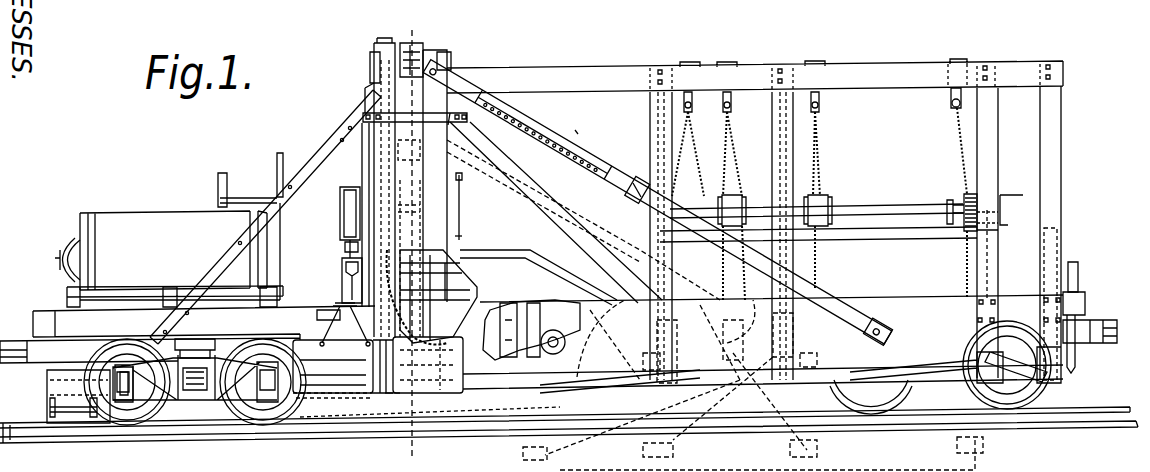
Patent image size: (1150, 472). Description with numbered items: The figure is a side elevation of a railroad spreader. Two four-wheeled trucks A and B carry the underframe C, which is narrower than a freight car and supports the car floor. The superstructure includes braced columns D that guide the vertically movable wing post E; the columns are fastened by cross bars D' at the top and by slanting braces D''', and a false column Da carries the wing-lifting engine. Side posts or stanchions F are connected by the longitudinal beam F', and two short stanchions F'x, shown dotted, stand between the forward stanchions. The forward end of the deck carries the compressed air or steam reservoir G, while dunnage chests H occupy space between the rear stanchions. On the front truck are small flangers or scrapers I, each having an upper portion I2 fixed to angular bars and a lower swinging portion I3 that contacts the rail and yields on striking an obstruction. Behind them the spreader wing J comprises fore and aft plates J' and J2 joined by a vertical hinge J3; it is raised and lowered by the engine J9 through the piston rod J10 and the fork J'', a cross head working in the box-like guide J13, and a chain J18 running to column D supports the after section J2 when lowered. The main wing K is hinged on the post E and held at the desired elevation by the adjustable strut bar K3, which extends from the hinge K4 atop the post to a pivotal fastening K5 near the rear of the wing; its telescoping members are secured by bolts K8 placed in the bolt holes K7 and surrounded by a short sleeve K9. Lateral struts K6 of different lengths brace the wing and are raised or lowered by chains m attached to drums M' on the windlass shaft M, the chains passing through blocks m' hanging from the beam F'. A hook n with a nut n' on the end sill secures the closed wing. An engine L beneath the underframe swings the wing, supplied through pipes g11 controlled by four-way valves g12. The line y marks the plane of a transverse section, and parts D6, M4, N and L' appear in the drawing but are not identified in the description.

The underframe C is at (187, 334).
The truck A is at (180, 400).
The front scraper or flanger I is at (47, 389).
The upper portion of scraper I2 is at (72, 397).
The lower swinging portion of scraper I3 is at (50, 410).
The compressed air or steam reservoir G is at (169, 259).
The wing post E is at (415, 187).
The section line Y—Y y is at (408, 235).
The hinge K4 is at (422, 45).
The cross bars or beams D' is at (405, 60).
The column D is at (356, 90).
The boom pivot D6 is at (450, 113).
The false column Da is at (352, 160).
The slanting braces D''' is at (478, 212).
The pivotal fastening K5 is at (541, 135).
The strut bar or link K3 is at (590, 160).
The bolt holes K7 is at (541, 142).
The short sleeve K9 is at (633, 192).
The longitudinal beam F' is at (755, 97).
The stanchion F is at (843, 234).
The short stanchion F'x is at (818, 274).
The dunnage chest H is at (890, 306).
The shaft M is at (816, 157).
The drum M' is at (775, 201).
The gear M4 is at (960, 202).
The hook n is at (1027, 243).
The nut n' is at (1081, 319).
The bumper N is at (1068, 366).
The chain m is at (761, 196).
The block m' is at (942, 192).
The four way valve g12 is at (461, 190).
The pipe g11 is at (462, 235).
The air or steam engine J9 is at (342, 232).
The piston rod J10 is at (345, 250).
The box-like guide J13 is at (346, 280).
The chain or cord J18 is at (386, 280).
The fork J'' is at (328, 324).
The spreader wing J is at (343, 366).
The forward plate member J' is at (333, 402).
The after plate section J2 is at (446, 386).
The vertical hinge J3 is at (392, 392).
The bolts K8 is at (624, 182).
The bracket L' is at (531, 317).
The engine L is at (553, 337).
The main wing K is at (753, 385).
The lateral braces or struts K6 is at (796, 272).
The truck B is at (933, 400).